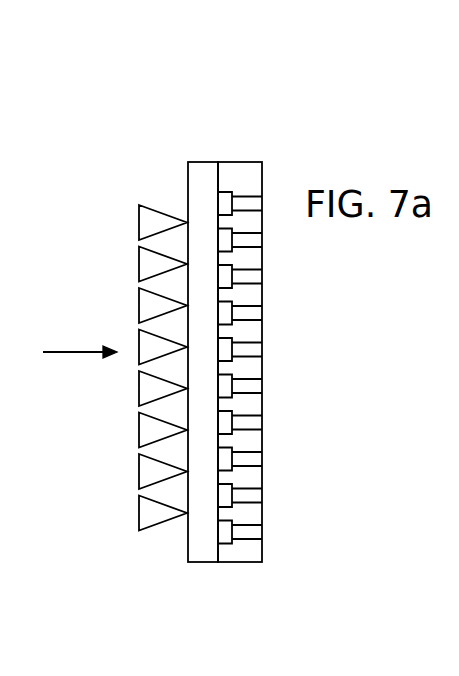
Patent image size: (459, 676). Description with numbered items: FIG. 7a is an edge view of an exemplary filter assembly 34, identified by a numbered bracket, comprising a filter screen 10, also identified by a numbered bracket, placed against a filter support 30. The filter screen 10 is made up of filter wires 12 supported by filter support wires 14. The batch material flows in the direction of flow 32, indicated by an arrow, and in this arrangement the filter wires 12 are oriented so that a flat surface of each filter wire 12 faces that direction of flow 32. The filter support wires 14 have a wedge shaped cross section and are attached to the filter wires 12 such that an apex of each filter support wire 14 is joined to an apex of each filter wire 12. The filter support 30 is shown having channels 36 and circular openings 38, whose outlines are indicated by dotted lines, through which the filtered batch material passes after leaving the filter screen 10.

The filter screen 10 is at (125, 152).
The filter wires 12 is at (162, 528).
The filter support wires 14 is at (207, 562).
The filter support 30 is at (243, 562).
The direction of flow 32 is at (77, 353).
The filter assembly 34 is at (129, 75).
The channels 36 is at (233, 507).
The openings 38 is at (247, 375).